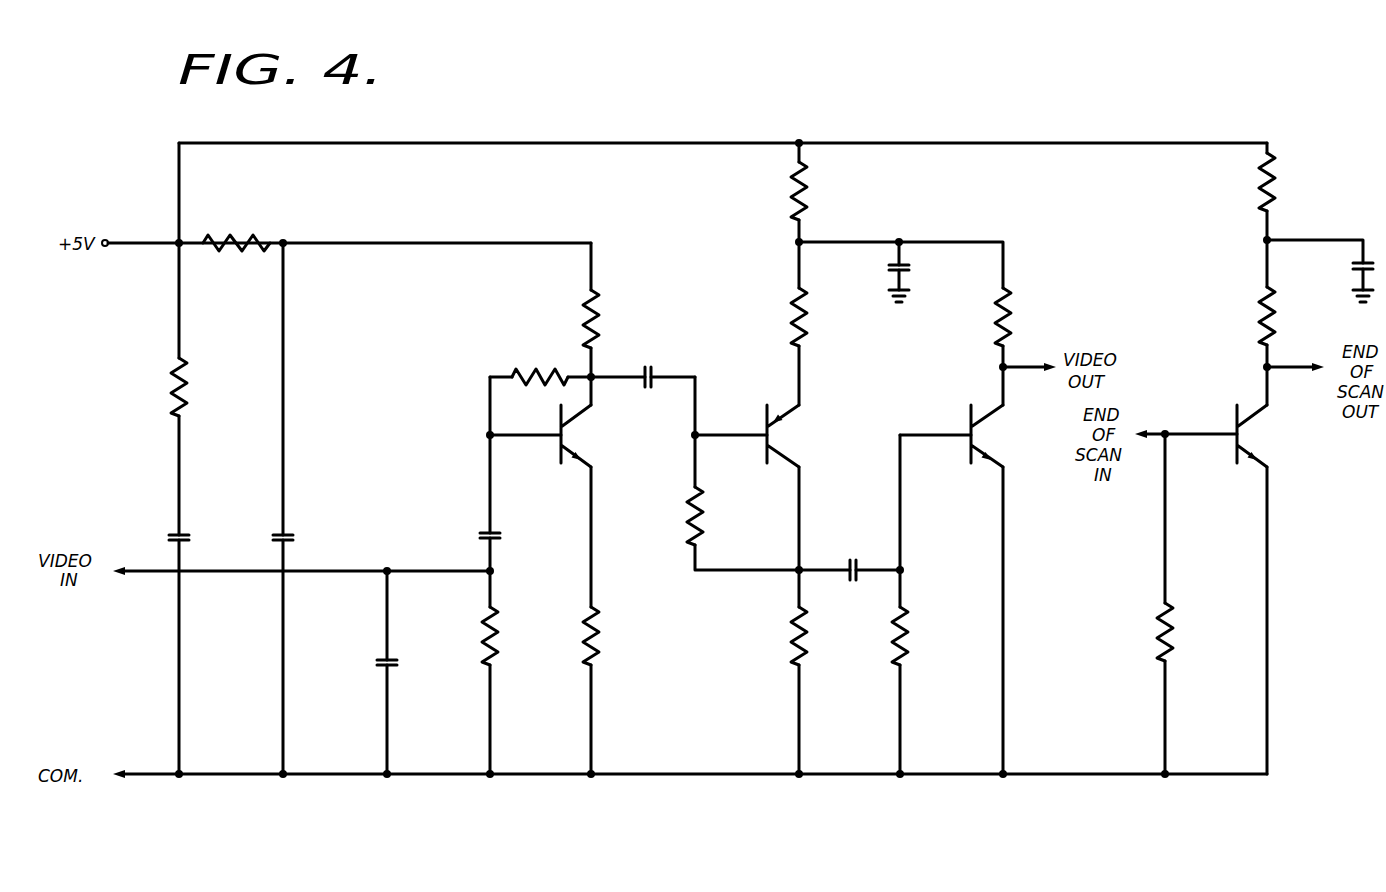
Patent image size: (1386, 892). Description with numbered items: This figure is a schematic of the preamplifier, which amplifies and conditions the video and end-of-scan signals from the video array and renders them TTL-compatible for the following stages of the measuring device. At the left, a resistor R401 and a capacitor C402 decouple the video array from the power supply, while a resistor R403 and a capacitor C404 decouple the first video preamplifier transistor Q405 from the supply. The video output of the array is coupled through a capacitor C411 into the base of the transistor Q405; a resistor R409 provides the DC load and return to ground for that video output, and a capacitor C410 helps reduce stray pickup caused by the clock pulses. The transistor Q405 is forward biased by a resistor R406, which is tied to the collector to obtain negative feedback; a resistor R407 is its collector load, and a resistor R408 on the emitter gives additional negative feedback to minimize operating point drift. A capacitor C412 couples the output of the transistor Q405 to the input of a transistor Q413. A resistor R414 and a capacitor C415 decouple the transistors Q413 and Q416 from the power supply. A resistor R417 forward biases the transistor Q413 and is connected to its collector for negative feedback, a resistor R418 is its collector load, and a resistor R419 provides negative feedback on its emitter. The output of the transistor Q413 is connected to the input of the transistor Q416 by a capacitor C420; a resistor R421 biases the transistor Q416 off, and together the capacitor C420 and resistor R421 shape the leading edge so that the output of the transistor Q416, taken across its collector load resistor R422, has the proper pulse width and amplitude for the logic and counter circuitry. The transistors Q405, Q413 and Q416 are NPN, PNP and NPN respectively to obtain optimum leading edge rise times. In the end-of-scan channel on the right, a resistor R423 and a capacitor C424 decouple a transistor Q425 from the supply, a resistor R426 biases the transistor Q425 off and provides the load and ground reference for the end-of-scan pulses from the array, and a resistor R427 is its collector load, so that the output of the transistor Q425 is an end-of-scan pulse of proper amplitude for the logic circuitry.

The resistor R401 is at (183, 381).
The resistor R403 is at (272, 238).
The capacitor C402 is at (184, 534).
The capacitor C404 is at (288, 534).
The capacitor C410 is at (392, 660).
The capacitor C411 is at (494, 533).
The resistor R409 is at (494, 630).
The resistor R408 is at (596, 630).
The resistor R407 is at (596, 312).
The resistor R406 is at (568, 371).
The capacitor C412 is at (652, 372).
The first video preamplifier transistor Q405 is at (573, 431).
The resistor R414 is at (805, 191).
The resistor R419 is at (805, 316).
The capacitor C415 is at (905, 266).
The resistor R422 is at (1008, 312).
The transistor Q413 is at (781, 434).
The resistor R417 is at (701, 513).
The capacitor C420 is at (870, 552).
The resistor R418 is at (805, 630).
The resistor R421 is at (906, 630).
The transistor Q416 is at (984, 434).
The resistor R423 is at (1273, 178).
The capacitor C424 is at (1354, 264).
The resistor R427 is at (1273, 302).
The transistor Q425 is at (1248, 434).
The resistor R426 is at (1171, 622).